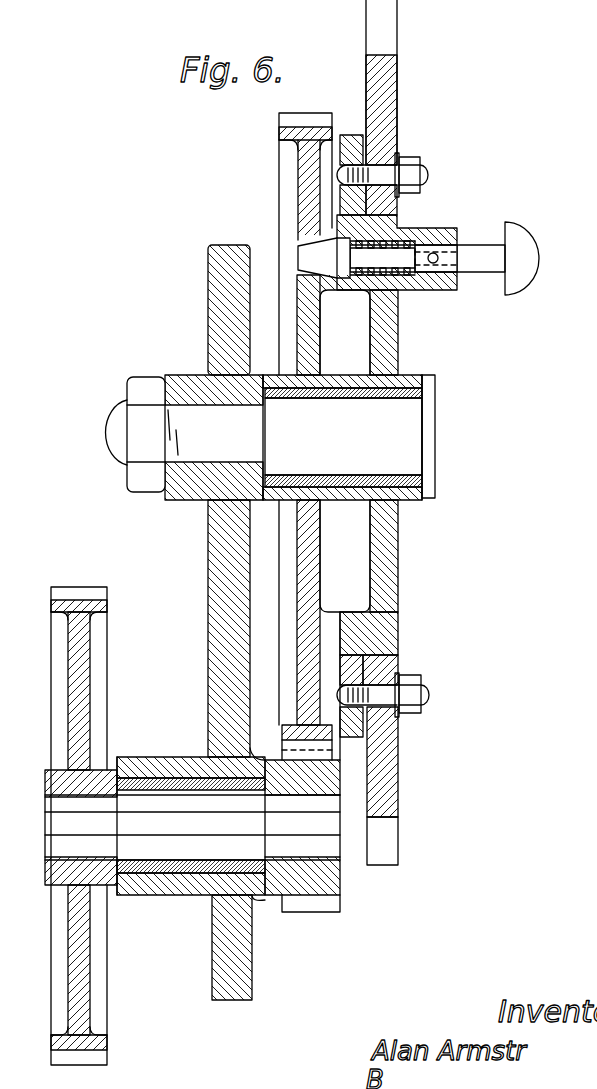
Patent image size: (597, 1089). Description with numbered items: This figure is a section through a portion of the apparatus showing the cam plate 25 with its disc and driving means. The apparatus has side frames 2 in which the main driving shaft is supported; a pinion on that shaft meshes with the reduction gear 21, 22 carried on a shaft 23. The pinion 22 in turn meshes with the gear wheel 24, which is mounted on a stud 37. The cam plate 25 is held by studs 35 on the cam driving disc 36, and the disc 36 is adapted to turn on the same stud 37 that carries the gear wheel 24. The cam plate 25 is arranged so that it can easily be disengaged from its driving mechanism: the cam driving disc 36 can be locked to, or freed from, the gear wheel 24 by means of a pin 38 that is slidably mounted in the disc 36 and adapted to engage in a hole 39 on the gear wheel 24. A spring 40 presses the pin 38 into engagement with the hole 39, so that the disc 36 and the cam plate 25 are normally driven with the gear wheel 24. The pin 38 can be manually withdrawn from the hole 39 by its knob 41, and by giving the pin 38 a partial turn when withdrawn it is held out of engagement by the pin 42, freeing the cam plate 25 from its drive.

The side frames 2 is at (212, 291).
The reduction gear 21 is at (90, 700).
The pinion 22 is at (340, 878).
The shaft 23 is at (343, 845).
The gear wheel 24 is at (289, 157).
The cam plate 25 is at (388, 93).
The studs 35 is at (428, 176).
The cam driving disc 36 is at (398, 562).
The stud 37 is at (343, 436).
The pin 38 is at (478, 268).
The hole 39 is at (300, 256).
The spring 40 is at (412, 278).
The knob 41 is at (521, 283).
The pin 42 is at (437, 254).